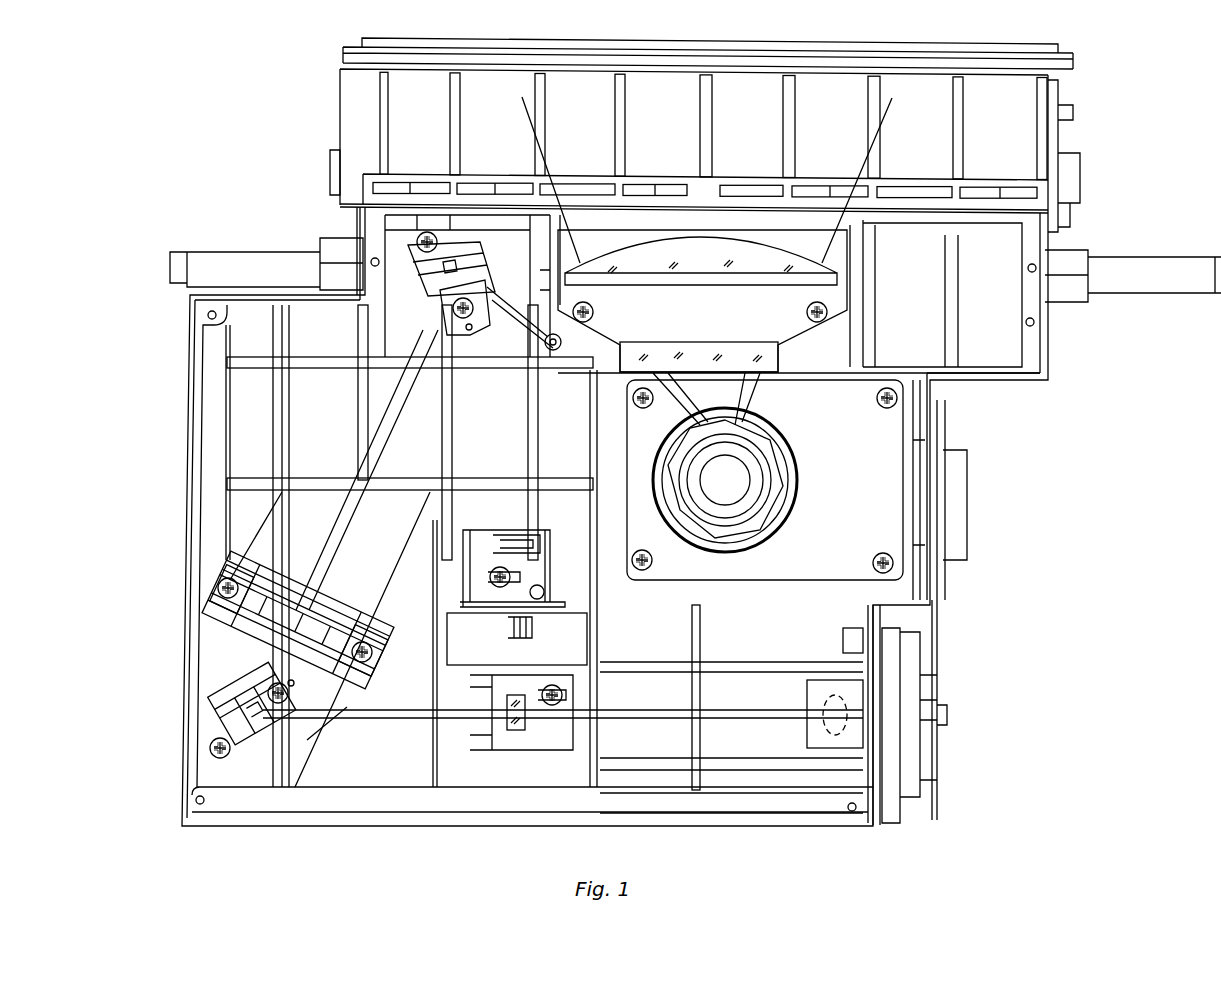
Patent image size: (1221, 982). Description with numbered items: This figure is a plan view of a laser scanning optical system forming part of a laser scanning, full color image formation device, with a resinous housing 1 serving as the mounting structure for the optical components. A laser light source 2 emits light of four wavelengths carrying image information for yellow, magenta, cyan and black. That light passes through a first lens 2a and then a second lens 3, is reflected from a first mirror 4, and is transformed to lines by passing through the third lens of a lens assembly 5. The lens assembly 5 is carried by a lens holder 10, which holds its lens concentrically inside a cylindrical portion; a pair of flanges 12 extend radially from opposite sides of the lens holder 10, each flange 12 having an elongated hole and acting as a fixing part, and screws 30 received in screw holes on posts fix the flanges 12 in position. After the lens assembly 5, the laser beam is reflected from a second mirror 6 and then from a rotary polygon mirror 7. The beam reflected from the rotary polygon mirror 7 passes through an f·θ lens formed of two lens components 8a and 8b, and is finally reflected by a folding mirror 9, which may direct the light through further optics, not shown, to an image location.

The resinous housing 1 is at (998, 380).
The laser light source 2 is at (855, 695).
The first lens 2a is at (850, 725).
The second lens 3 is at (520, 695).
The first mirror 4 is at (225, 690).
The lens assembly 5 is at (245, 549).
The second mirror 6 is at (428, 300).
The rotary polygon mirror 7 is at (783, 435).
The lens component 8a is at (683, 323).
The lens component 8b is at (715, 285).
The folding mirror 9 is at (758, 63).
The lens holder 10 is at (322, 614).
The flange 12 is at (225, 565).
The screw 30 is at (213, 585).